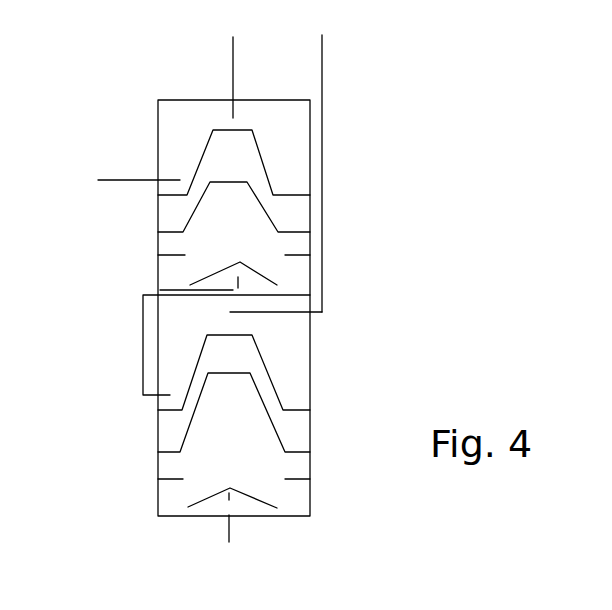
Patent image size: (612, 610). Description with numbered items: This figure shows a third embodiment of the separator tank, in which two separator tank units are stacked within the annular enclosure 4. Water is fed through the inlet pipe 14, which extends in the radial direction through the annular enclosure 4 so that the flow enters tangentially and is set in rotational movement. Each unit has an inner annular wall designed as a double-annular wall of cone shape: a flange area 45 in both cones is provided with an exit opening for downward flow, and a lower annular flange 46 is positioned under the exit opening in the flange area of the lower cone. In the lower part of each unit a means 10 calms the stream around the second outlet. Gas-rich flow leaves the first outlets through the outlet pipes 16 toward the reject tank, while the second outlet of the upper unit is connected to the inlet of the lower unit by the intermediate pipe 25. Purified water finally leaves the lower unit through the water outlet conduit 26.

The annular enclosure 4 is at (310, 363).
The means for calming the stream 10 is at (218, 272).
The inlet pipe 14 is at (110, 180).
The outlet pipe 16 is at (233, 63).
The intermediate pipe 25 is at (143, 348).
The water outlet conduit 26 is at (230, 527).
The flange area 45 is at (297, 200).
The lower annular flange 46 is at (297, 252).